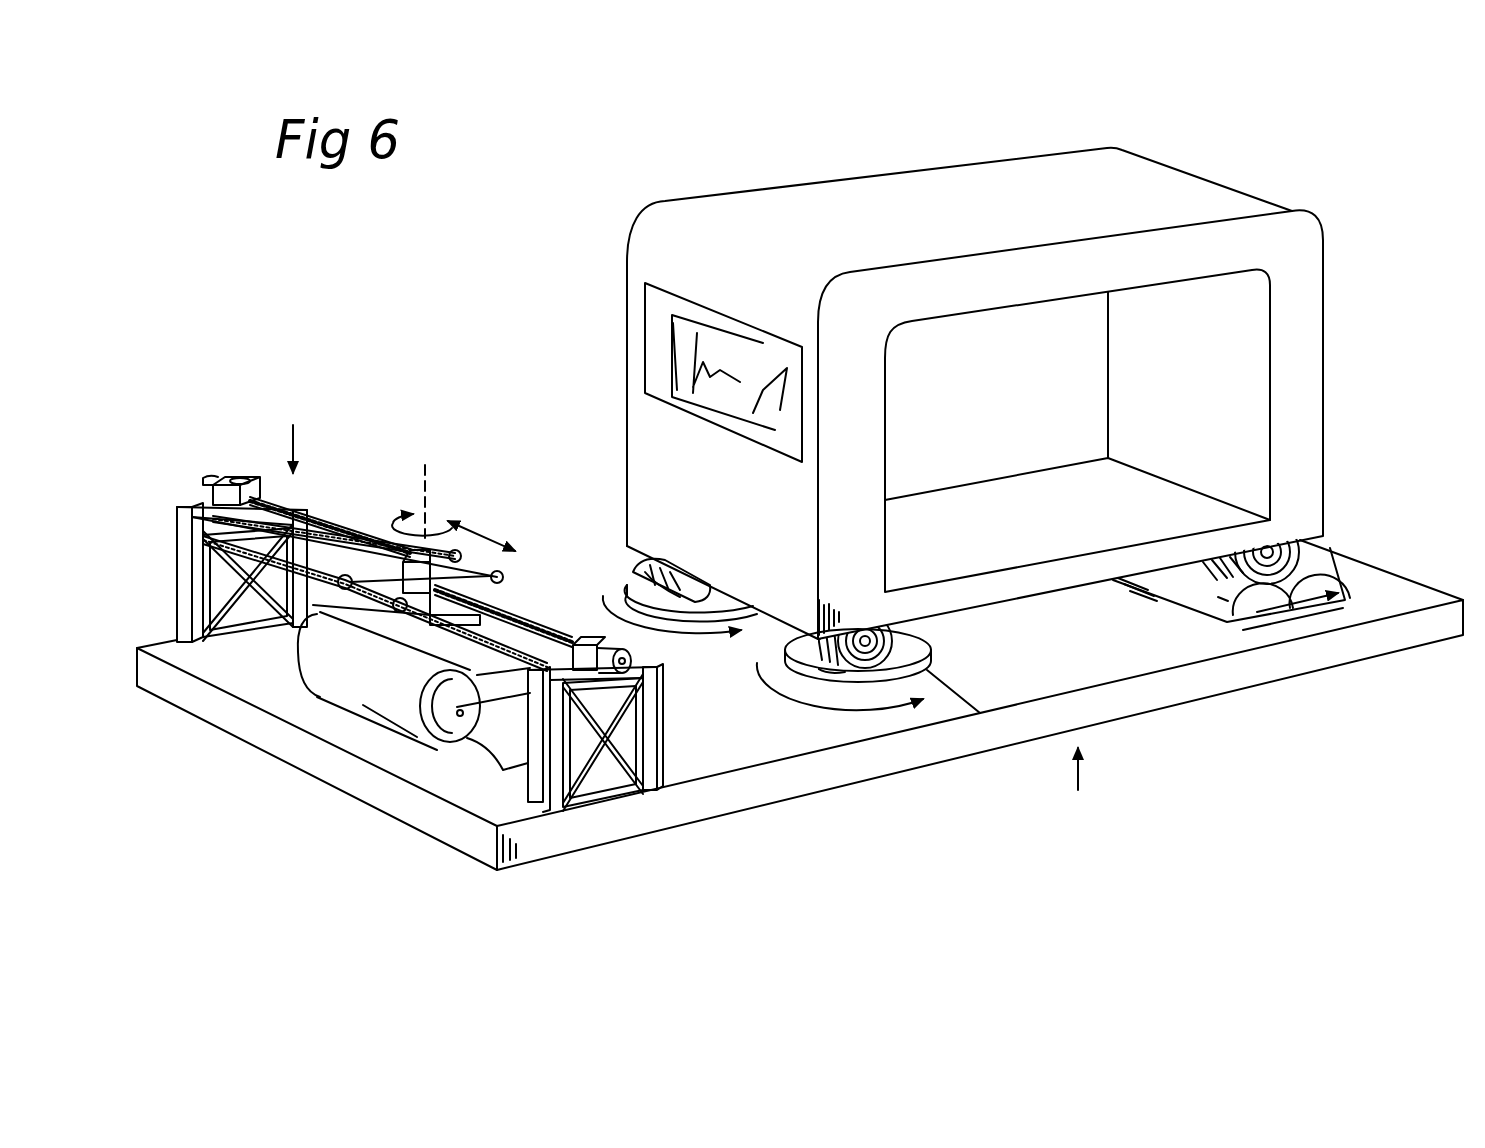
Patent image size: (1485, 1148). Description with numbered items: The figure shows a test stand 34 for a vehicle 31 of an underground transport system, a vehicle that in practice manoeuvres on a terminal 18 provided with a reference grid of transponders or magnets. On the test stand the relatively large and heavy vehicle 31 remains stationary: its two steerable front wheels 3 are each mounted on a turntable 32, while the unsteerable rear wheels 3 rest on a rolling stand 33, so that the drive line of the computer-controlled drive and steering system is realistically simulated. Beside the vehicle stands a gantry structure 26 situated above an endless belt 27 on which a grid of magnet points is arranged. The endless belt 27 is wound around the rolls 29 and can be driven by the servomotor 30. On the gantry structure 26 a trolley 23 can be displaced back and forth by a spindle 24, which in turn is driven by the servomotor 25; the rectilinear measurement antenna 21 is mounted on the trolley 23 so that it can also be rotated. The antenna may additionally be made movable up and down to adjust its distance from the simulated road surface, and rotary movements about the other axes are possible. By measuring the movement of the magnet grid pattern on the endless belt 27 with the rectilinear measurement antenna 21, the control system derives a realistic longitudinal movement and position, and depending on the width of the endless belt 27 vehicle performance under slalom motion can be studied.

The wheels 3 is at (633, 560).
The terminal 18 is at (1123, 657).
The rectilinear measurement antenna 21 is at (377, 635).
The trolley 23 is at (213, 503).
The spindle 24 is at (337, 507).
The servomotor 25 is at (655, 648).
The gantry structure 26 is at (271, 438).
The endless belt 27 is at (362, 700).
The rolls 29 is at (447, 742).
The servomotor 30 is at (660, 743).
The vehicle 31 is at (792, 210).
The turntable 32 is at (628, 575).
The rolling stand 33 is at (1338, 598).
The test stand 34 is at (1102, 783).